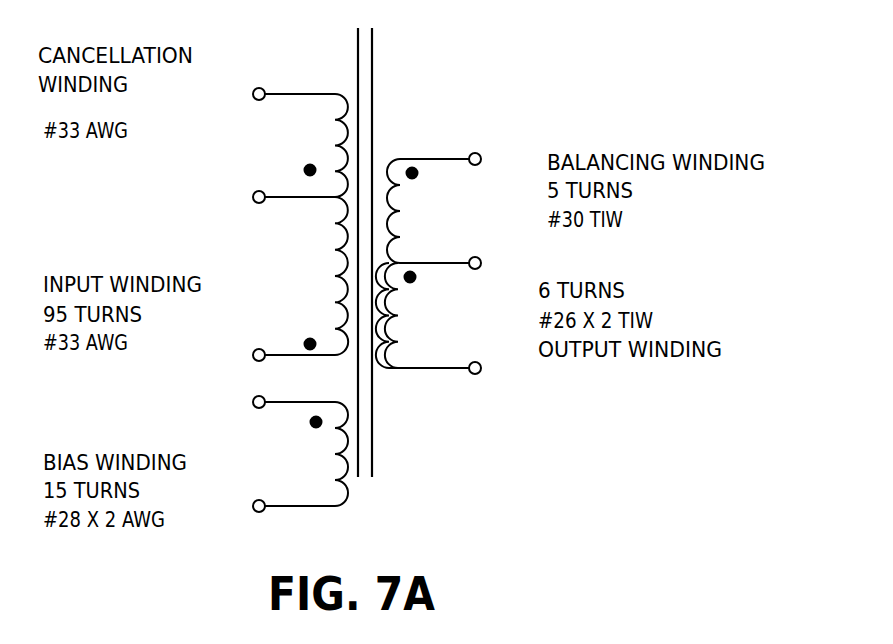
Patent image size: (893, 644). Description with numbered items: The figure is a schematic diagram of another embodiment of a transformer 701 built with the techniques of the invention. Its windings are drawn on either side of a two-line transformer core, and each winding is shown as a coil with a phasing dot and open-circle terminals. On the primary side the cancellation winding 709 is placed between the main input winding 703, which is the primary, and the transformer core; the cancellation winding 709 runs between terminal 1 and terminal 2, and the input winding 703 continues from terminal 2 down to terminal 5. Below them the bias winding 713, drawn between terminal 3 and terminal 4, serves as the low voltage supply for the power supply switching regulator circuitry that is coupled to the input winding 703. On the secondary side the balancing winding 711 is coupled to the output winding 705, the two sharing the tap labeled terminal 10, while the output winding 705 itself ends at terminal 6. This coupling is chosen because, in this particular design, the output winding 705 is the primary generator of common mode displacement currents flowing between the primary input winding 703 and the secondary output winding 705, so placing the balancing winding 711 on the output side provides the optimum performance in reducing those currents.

The transformer 701 is at (576, 42).
The input winding 703 is at (239, 290).
The output winding 705 is at (495, 333).
The cancellation winding 709 is at (227, 142).
The balancing winding 711 is at (467, 205).
The bias winding 713 is at (236, 471).
The terminal pin 1 is at (293, 109).
The terminal pin 2 is at (293, 212).
The terminal pin 3 is at (293, 419).
The terminal pin 4 is at (293, 523).
The terminal pin 5 is at (293, 369).
The terminal pin 6 is at (446, 371).
The terminal pin 10 is at (454, 274).